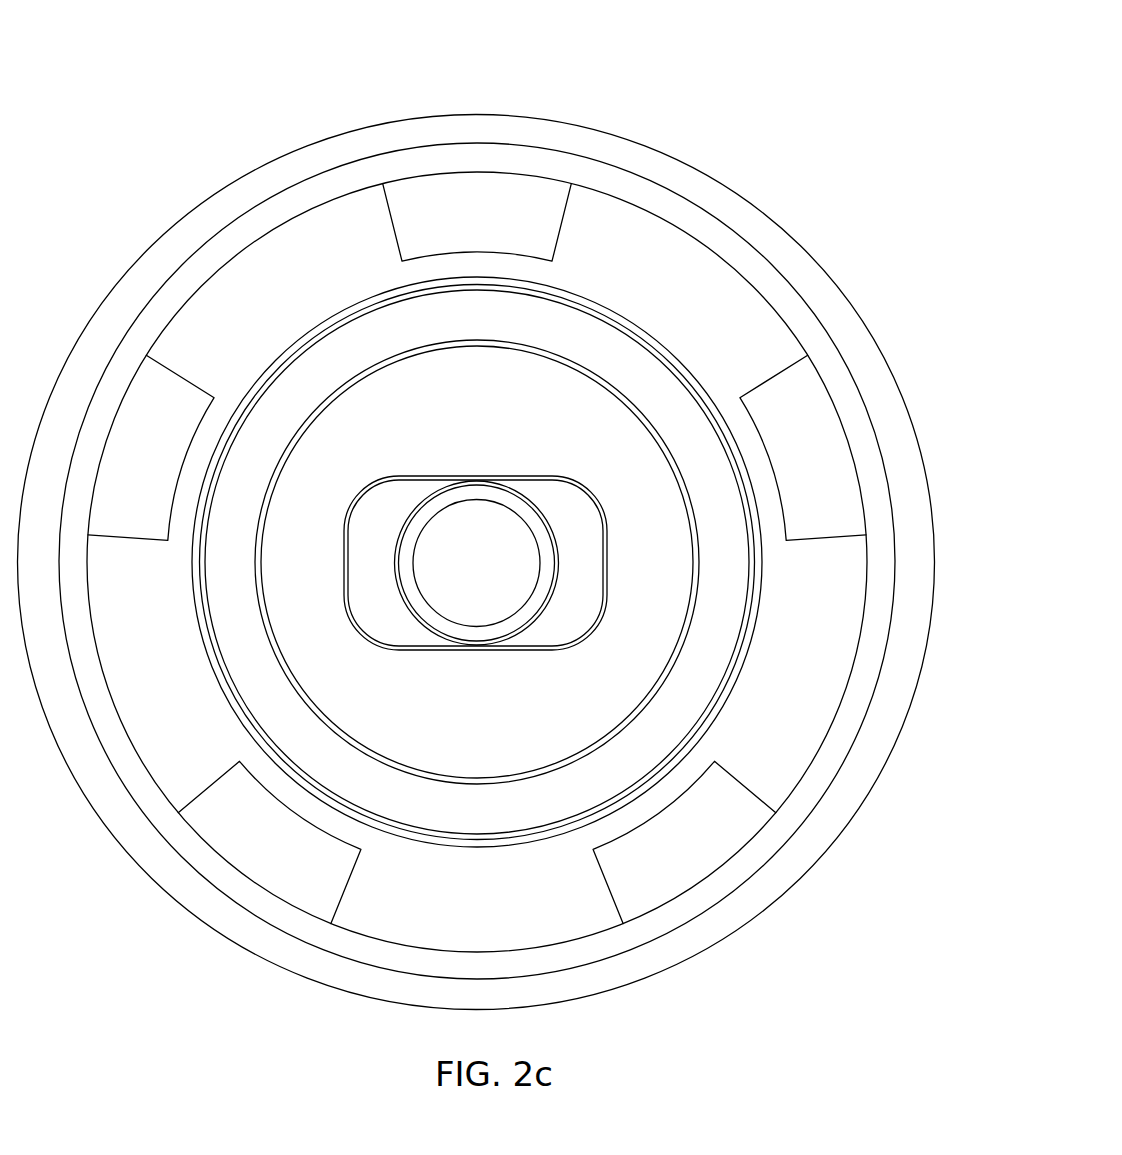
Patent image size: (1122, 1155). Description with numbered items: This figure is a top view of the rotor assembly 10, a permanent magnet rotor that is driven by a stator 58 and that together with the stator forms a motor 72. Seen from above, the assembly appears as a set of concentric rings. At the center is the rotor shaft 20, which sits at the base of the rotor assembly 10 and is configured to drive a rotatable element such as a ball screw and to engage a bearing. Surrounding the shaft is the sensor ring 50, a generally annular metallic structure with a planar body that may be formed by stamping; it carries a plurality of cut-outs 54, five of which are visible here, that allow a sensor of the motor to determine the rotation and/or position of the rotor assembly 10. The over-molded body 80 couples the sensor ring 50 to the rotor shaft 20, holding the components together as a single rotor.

The motor 72 is at (231, 140).
The stator 58 is at (660, 176).
The over-molded body 80 is at (135, 405).
The cut-outs 54 is at (398, 218).
The sensor ring 50 is at (750, 305).
The rotor shaft 20 is at (360, 718).
The rotor assembly 10 is at (260, 328).